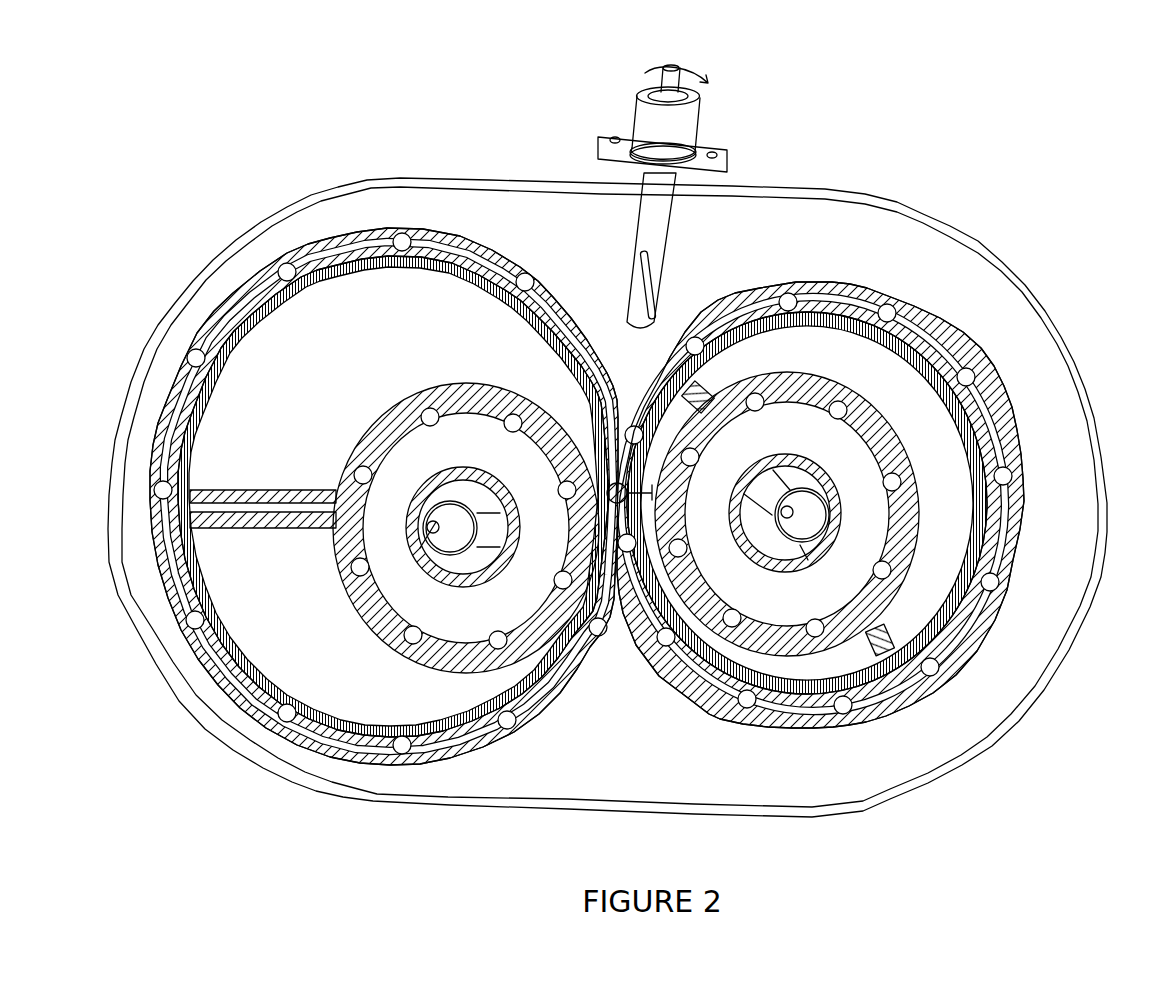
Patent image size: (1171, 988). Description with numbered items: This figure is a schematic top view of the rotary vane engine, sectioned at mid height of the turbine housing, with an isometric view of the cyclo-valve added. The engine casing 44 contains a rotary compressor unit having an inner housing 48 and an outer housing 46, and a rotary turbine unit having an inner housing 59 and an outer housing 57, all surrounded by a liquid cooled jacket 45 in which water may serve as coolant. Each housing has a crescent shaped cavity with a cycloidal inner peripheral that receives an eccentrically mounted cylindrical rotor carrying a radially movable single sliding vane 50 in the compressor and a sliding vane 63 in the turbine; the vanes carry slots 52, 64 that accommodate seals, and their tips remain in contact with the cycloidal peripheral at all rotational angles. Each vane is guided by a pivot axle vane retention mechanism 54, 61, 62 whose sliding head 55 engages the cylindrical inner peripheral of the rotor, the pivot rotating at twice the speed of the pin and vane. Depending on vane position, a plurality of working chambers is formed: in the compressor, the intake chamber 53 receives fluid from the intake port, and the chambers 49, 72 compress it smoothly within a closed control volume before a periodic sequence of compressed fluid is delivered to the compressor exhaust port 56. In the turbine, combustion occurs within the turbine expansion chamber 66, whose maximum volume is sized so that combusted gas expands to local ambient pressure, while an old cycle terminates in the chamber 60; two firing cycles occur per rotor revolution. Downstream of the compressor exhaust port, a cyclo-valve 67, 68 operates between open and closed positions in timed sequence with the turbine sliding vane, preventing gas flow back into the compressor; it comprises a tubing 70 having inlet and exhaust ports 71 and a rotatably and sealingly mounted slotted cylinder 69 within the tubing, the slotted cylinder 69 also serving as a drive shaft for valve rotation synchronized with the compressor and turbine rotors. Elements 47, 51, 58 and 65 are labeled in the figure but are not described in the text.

The rotary combustion engine casing 44 is at (865, 190).
The liquid cooled jacket 45 is at (895, 226).
The compressor outer housing 46 is at (905, 305).
The right ring bearing balls 47 is at (982, 357).
The compressor inner housing 48 is at (1005, 430).
The compressor working chamber 49 is at (960, 457).
The compressor sliding vane 50 is at (947, 663).
The right inner ring balls 51 is at (923, 677).
The vane seal slot 52 is at (895, 715).
The intake chamber 53 is at (835, 668).
The pivot axle vane retention mechanism 54 is at (802, 533).
The sliding head of pivot axle 55 is at (772, 548).
The compressor exhaust port 56 is at (622, 505).
The turbine outer housing 57 is at (545, 665).
The left outer ring edge 58 is at (503, 760).
The turbine inner housing 59 is at (463, 752).
The turbine working chamber 60 is at (420, 733).
The pivot axle vane retention mechanism 61 is at (440, 575).
The pivot axle vane retention mechanism 62 is at (430, 535).
The turbine sliding vane 63 is at (265, 525).
The vane seal slot 64 is at (240, 540).
The upper bar 65 is at (205, 507).
The turbine expansion chamber 66 is at (230, 452).
The cyclo-valve 67 is at (612, 470).
The cyclo-valve 68 is at (605, 475).
The slotted cylinder 69 is at (674, 68).
The cyclo-valve tubing 70 is at (677, 132).
The inlet and exhaust ports 71 is at (645, 487).
The compressor working chamber 72 is at (660, 470).